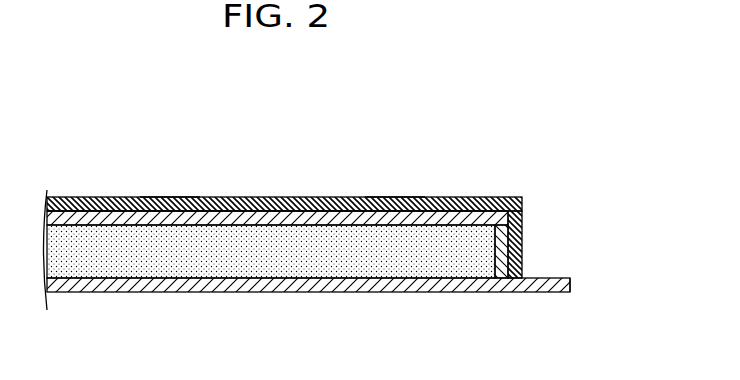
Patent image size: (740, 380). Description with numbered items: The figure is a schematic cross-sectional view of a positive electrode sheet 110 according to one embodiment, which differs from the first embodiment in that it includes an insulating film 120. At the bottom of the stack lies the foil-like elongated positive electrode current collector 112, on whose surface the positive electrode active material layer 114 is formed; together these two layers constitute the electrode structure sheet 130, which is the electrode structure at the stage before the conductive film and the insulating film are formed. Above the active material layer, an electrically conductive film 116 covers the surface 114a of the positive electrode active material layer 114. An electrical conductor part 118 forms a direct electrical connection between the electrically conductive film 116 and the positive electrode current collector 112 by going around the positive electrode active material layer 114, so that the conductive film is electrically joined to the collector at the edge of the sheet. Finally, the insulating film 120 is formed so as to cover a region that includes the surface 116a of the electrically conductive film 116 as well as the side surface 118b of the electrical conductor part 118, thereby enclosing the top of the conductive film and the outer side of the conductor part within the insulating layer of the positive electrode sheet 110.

The positive electrode sheet 110 is at (557, 93).
The positive electrode current collector 112 is at (488, 292).
The positive electrode active material layer 114 is at (504, 267).
The surface of positive electrode active material layer 114a is at (395, 197).
The electrically conductive film 116 is at (323, 197).
The surface of electrically conductive film 116a is at (167, 197).
The electrical conductor part 118 is at (522, 228).
The side surface of electrical conductor part 118b is at (508, 253).
The insulating film 120 is at (254, 197).
The electrode structure sheet 130 is at (631, 245).